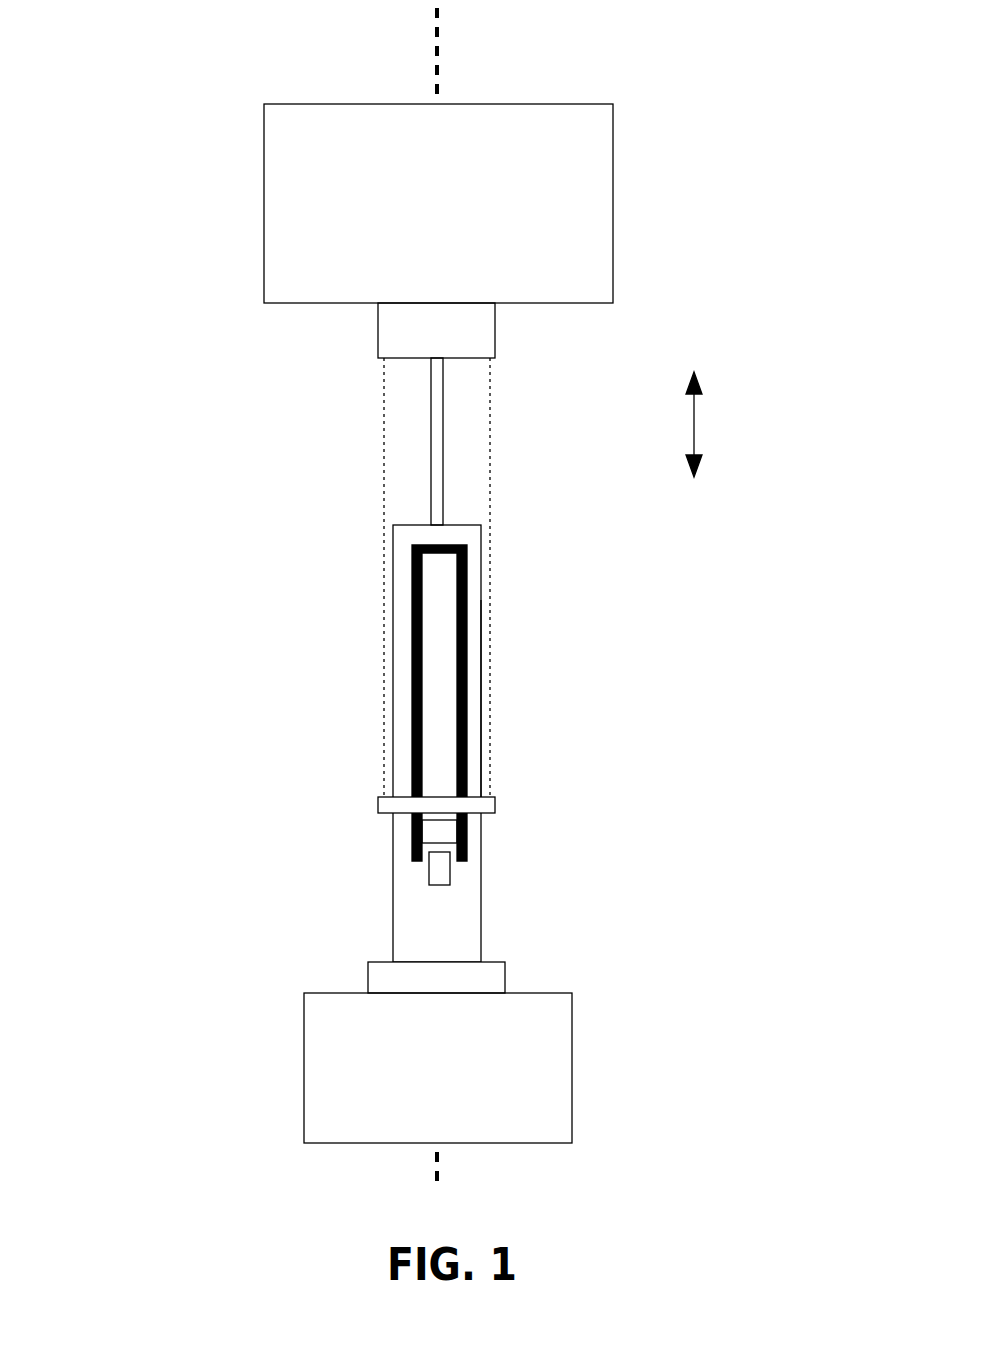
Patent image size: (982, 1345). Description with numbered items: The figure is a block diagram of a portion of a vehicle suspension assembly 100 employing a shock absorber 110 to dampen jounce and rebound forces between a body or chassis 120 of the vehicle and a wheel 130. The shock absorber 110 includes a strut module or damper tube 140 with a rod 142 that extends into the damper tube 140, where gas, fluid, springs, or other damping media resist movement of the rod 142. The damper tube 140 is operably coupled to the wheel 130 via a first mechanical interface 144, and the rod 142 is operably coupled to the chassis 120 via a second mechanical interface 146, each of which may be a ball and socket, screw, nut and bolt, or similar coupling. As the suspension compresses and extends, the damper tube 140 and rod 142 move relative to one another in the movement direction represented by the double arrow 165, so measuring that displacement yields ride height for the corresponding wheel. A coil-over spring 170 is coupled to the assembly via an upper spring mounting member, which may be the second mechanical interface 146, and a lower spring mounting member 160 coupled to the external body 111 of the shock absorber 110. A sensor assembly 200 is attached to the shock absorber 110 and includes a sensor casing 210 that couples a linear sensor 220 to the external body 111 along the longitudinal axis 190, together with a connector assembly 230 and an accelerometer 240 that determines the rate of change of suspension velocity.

The suspension assembly 100 is at (129, 227).
The shock absorber 110 is at (603, 518).
The external body 111 is at (537, 698).
The body or chassis 120 is at (538, 217).
The wheel 130 is at (497, 1084).
The damper tube 140 is at (486, 743).
The rod 142 is at (360, 441).
The first mechanical interface 144 is at (484, 959).
The second mechanical interface 146 is at (488, 331).
The lower spring mounting member 160 is at (352, 784).
The double arrow 165 is at (743, 424).
The coil-over spring 170 is at (377, 577).
The longitudinal axis 190 is at (521, 596).
The sensor assembly 200 is at (444, 737).
The sensor casing 210 is at (467, 853).
The linear sensor 220 is at (509, 686).
The connector assembly 230 is at (500, 879).
The accelerometer 240 is at (503, 825).